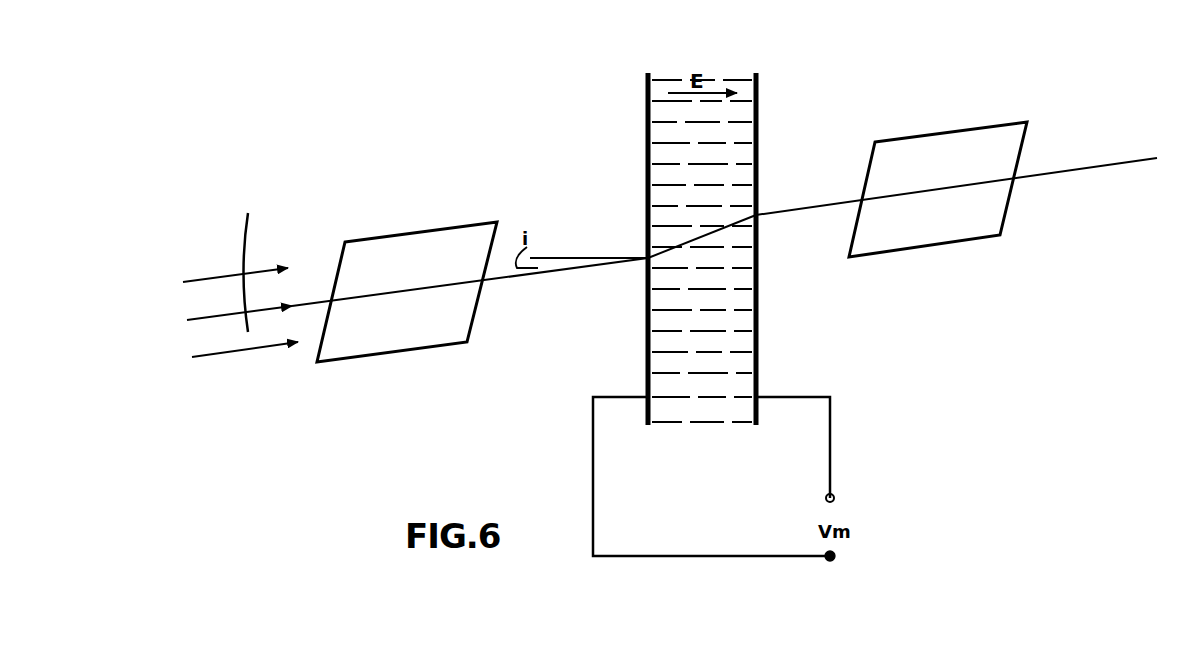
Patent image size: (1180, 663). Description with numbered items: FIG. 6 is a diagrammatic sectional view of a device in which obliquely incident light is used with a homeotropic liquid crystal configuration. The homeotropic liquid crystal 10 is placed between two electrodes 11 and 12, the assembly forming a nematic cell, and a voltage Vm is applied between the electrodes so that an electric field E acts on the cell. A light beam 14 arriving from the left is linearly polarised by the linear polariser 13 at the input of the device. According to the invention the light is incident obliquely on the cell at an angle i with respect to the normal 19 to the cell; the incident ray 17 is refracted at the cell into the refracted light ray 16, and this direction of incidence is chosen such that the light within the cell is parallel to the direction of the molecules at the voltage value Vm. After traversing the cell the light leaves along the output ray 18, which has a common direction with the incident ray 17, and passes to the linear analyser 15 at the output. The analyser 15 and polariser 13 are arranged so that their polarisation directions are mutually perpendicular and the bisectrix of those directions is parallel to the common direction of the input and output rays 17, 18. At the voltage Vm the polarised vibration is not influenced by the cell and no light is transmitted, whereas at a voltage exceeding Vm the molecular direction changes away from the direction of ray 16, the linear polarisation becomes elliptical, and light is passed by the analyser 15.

The layer of nematic liquid crystal 10 is at (672, 130).
The electrode 11 is at (648, 91).
The electrode 12 is at (757, 99).
The linear polariser 13 is at (422, 245).
The light beam 14 is at (240, 272).
The linear analyser 15 is at (965, 150).
The refracted light ray 16 is at (710, 232).
The incident ray 17 is at (408, 290).
The output ray 18 is at (1110, 162).
The normal 19 is at (600, 257).